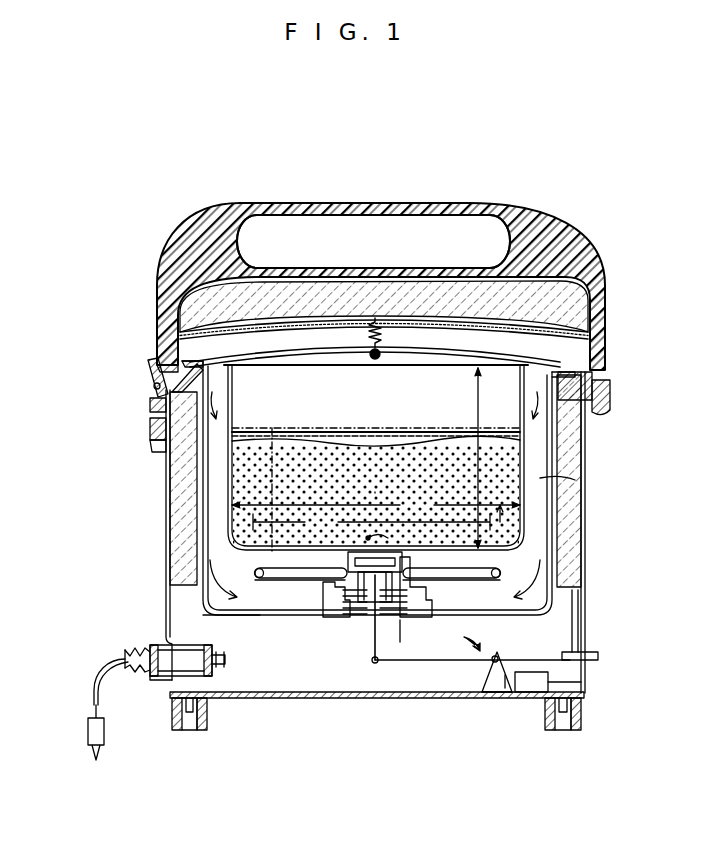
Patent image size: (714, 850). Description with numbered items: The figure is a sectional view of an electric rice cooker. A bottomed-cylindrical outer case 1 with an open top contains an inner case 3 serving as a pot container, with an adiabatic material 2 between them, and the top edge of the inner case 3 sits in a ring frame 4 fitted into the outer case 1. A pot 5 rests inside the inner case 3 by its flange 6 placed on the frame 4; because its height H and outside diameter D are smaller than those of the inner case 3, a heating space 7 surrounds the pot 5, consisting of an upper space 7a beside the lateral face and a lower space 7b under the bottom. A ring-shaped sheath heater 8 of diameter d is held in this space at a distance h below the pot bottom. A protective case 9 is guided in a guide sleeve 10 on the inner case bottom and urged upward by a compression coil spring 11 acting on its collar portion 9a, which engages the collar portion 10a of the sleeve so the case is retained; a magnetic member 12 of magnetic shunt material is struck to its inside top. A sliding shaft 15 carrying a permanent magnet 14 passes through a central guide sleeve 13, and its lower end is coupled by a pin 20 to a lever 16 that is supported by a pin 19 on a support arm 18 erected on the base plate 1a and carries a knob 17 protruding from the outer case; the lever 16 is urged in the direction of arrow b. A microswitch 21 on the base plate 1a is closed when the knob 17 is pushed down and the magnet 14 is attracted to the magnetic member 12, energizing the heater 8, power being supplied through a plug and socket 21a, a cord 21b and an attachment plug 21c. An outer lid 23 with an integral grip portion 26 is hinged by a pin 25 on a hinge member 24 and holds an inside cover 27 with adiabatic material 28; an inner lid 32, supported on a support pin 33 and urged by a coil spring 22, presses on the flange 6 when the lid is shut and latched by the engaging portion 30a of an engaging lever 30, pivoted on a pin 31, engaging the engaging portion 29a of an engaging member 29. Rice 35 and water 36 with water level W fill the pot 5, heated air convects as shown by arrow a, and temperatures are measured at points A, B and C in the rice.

The outer case 1 is at (167, 604).
The base plate 1a is at (308, 698).
The adiabatic material 2 is at (170, 546).
The inner case 3 is at (246, 601).
The ring frame 4 is at (165, 350).
The pot 5 is at (233, 379).
The flange 6 is at (194, 347).
The heating space 7 is at (300, 616).
The upper space 7a is at (575, 480).
The lower space 7b is at (258, 630).
The sheath heater 8 is at (382, 591).
The protective case 9 is at (375, 561).
The collar portion 9a is at (432, 594).
The guide sleeve 10 is at (256, 589).
The collar portion 10a is at (340, 592).
The compression coil spring 11 is at (408, 634).
The magnetic member 12 is at (415, 566).
The guide sleeve 13 is at (416, 591).
The permanent magnet 14 is at (350, 561).
The sliding shaft 15 is at (372, 657).
The lever 16 is at (428, 663).
The knob 17 is at (587, 661).
The support arm 18 is at (492, 679).
The pin 19 is at (500, 660).
The pin 20 is at (373, 663).
The microswitch 21 is at (548, 684).
The plug and socket 21a is at (160, 681).
The cord 21b is at (93, 691).
The attachment plug 21c is at (97, 761).
The coil spring 22 is at (386, 335).
The outer lid 23 is at (588, 254).
The hinge member 24 is at (604, 398).
The pin 25 is at (600, 378).
The grip portion 26 is at (462, 206).
The inside cover 27 is at (490, 325).
The adiabatic material 28 is at (600, 307).
The engaging member 29 is at (160, 450).
The engaging portion 29a is at (150, 406).
The engaging lever 30 is at (150, 366).
The engaging portion 30a is at (150, 428).
The pin 31 is at (154, 386).
The inner lid 32 is at (289, 360).
The support pin 33 is at (381, 361).
The rice 35 is at (452, 446).
The water 36 is at (326, 429).
The upper portion measuring point A is at (376, 446).
The intermediate portion measuring point B is at (376, 493).
The lower portion measuring point C is at (388, 536).
The outside diameter D is at (376, 505).
The diameter of sheath heater d is at (371, 523).
The height H is at (481, 458).
The distance h is at (508, 519).
The water level W is at (272, 490).
The arrow a is at (375, 495).
The arrow b is at (464, 638).